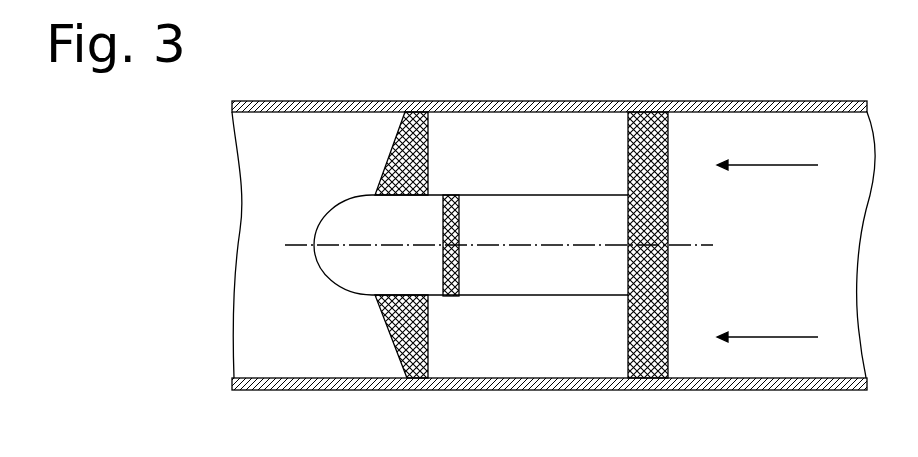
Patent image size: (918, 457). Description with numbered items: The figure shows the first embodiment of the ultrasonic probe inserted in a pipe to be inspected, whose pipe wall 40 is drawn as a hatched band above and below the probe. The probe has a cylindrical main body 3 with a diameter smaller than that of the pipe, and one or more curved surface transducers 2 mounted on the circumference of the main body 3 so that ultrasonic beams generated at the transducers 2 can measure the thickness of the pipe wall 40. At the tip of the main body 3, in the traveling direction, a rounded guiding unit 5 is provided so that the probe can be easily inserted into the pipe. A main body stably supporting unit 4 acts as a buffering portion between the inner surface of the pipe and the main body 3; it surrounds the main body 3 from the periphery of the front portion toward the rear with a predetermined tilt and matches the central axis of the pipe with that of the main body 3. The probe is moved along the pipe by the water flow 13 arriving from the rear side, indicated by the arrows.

The pipe wall 40 is at (728, 101).
The water flow 13 is at (765, 165).
The main body 3 is at (538, 195).
The guiding unit 5 is at (335, 230).
The transducer 2 is at (449, 195).
The main body stably supporting unit 4 is at (628, 352).